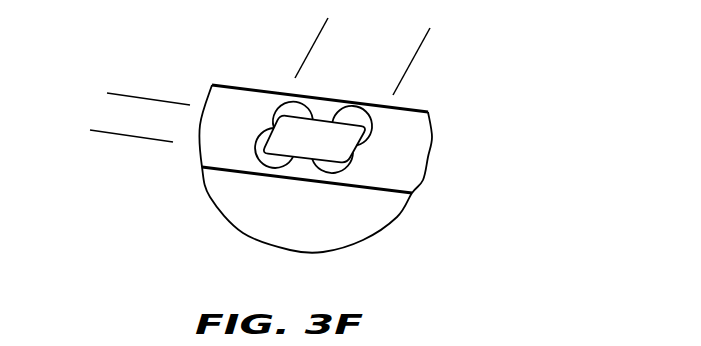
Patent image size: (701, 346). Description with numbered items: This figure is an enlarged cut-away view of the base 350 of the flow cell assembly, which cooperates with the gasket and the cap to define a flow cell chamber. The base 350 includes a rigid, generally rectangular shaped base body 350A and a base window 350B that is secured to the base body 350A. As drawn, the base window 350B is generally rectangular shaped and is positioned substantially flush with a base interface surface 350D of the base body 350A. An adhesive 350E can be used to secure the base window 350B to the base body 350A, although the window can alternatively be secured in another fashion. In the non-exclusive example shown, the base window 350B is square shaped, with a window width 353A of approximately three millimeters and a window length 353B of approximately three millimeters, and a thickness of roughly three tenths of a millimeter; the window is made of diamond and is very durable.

The base 350 is at (415, 215).
The base body 350A is at (223, 193).
The base window 350B is at (337, 152).
The base interface surface 350D is at (417, 127).
The adhesive 350E is at (272, 157).
The window width 353A is at (170, 63).
The window length 353B is at (457, 57).